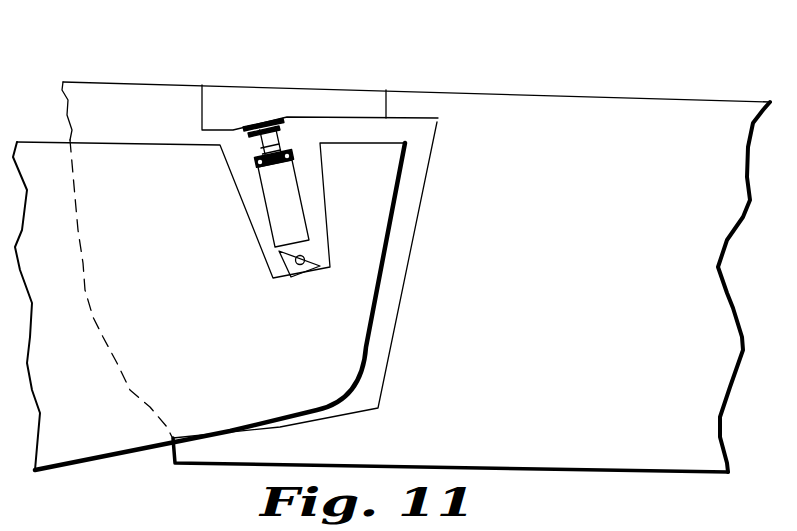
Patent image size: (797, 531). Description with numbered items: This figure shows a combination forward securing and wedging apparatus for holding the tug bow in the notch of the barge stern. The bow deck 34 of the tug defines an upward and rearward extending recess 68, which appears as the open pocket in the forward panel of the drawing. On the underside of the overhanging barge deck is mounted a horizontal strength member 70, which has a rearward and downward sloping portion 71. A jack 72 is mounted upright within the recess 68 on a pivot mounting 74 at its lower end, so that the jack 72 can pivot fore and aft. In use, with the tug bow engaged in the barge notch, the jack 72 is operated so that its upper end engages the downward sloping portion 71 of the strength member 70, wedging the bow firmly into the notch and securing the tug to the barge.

The bow deck 34 is at (92, 97).
The recess 68 is at (302, 152).
The horizontal strength member 70 is at (302, 102).
The rearward and downward portion 71 is at (255, 126).
The jack 72 is at (303, 192).
The pivot mounting 74 is at (304, 268).